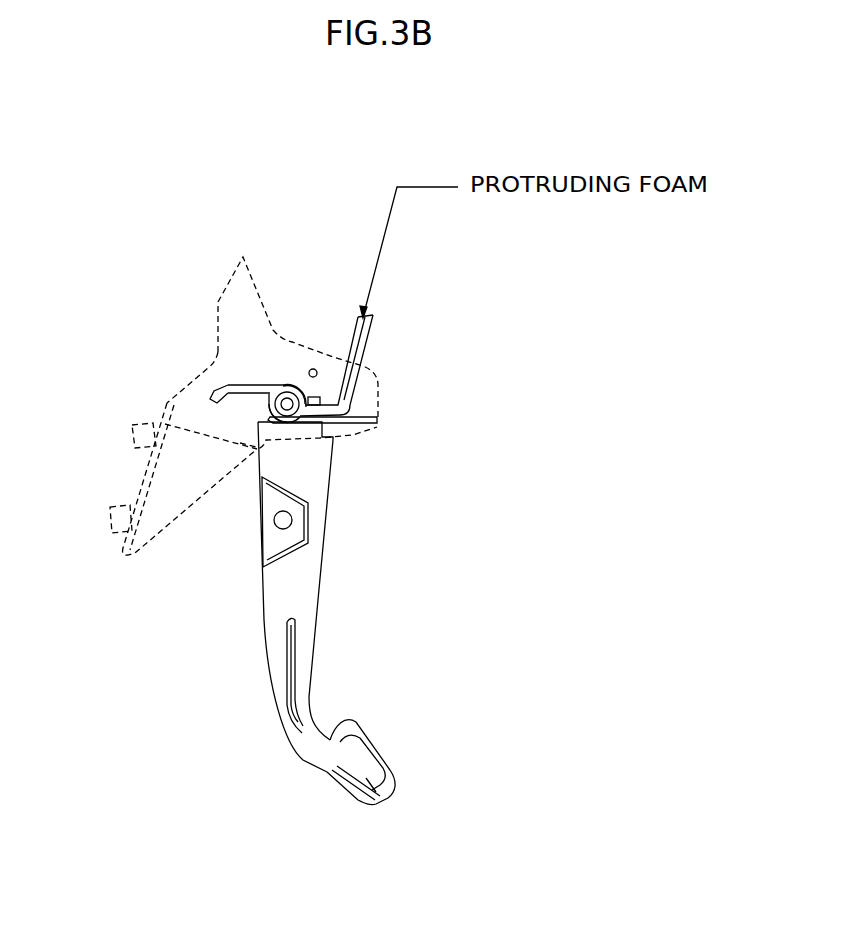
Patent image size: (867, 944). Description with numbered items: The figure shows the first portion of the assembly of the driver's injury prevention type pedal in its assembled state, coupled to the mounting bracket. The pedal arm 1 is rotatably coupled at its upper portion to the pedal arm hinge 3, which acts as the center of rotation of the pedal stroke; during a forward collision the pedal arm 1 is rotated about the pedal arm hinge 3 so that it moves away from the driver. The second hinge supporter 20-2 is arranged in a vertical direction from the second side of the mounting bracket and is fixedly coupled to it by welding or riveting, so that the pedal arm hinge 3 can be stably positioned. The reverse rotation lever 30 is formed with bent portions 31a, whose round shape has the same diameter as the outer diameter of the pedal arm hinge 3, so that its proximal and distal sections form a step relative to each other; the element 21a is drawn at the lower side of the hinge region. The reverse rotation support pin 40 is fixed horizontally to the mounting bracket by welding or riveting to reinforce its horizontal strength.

The pedal arm 1 is at (316, 598).
The pedal arm hinge 3 is at (300, 422).
The second hinge supporter 20-2 is at (366, 424).
The lower hook portion 21a is at (266, 408).
The reverse rotation lever 30 is at (373, 317).
The bent portion 31a is at (296, 385).
The reverse rotation support pin 40 is at (318, 373).